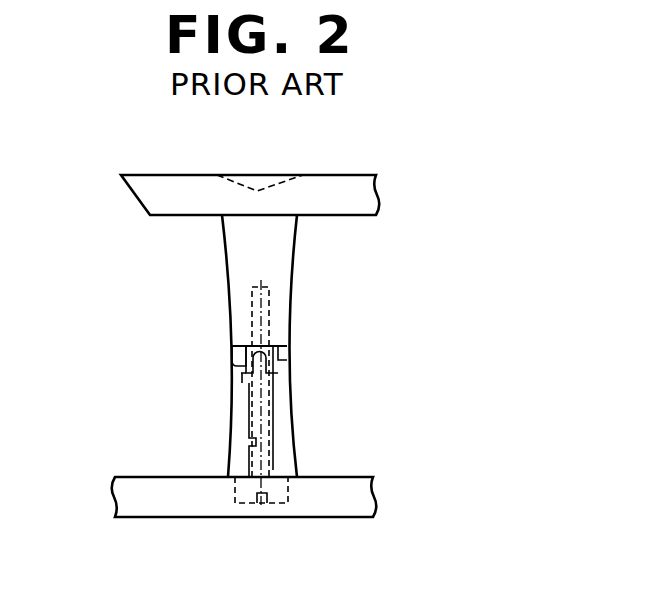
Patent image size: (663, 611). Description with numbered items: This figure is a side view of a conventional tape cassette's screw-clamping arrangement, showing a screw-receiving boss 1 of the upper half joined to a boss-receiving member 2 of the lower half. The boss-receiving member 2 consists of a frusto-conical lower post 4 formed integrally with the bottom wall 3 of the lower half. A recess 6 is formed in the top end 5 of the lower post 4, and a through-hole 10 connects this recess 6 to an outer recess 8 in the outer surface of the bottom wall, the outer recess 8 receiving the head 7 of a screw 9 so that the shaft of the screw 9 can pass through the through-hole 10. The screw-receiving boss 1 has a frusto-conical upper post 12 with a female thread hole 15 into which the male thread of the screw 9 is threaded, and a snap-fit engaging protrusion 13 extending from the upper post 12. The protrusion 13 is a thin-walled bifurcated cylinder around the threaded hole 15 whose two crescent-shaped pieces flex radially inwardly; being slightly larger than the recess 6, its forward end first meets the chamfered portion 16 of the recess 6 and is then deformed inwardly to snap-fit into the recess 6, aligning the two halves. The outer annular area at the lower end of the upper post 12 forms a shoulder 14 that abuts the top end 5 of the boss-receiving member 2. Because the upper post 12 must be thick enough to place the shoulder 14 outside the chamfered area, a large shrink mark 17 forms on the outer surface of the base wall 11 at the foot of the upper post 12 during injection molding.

The screw-receiving boss 1 is at (304, 285).
The boss-receiving member 2 is at (304, 438).
The bottom wall 3 is at (345, 508).
The lower post 4 is at (273, 400).
The top end 5 is at (232, 358).
The recess 6 is at (245, 381).
The head 7 is at (254, 505).
The outer recess 8 is at (237, 518).
The screw 9 is at (280, 420).
The through-hole 10 is at (252, 442).
The base wall 11 is at (357, 183).
The upper post 12 is at (285, 252).
The snap-fit engaging protrusion 13 is at (285, 360).
The shoulder 14 is at (287, 348).
The female thread hole 15 is at (263, 307).
The chamfered portion 16 is at (233, 345).
The shrink mark 17 is at (268, 184).